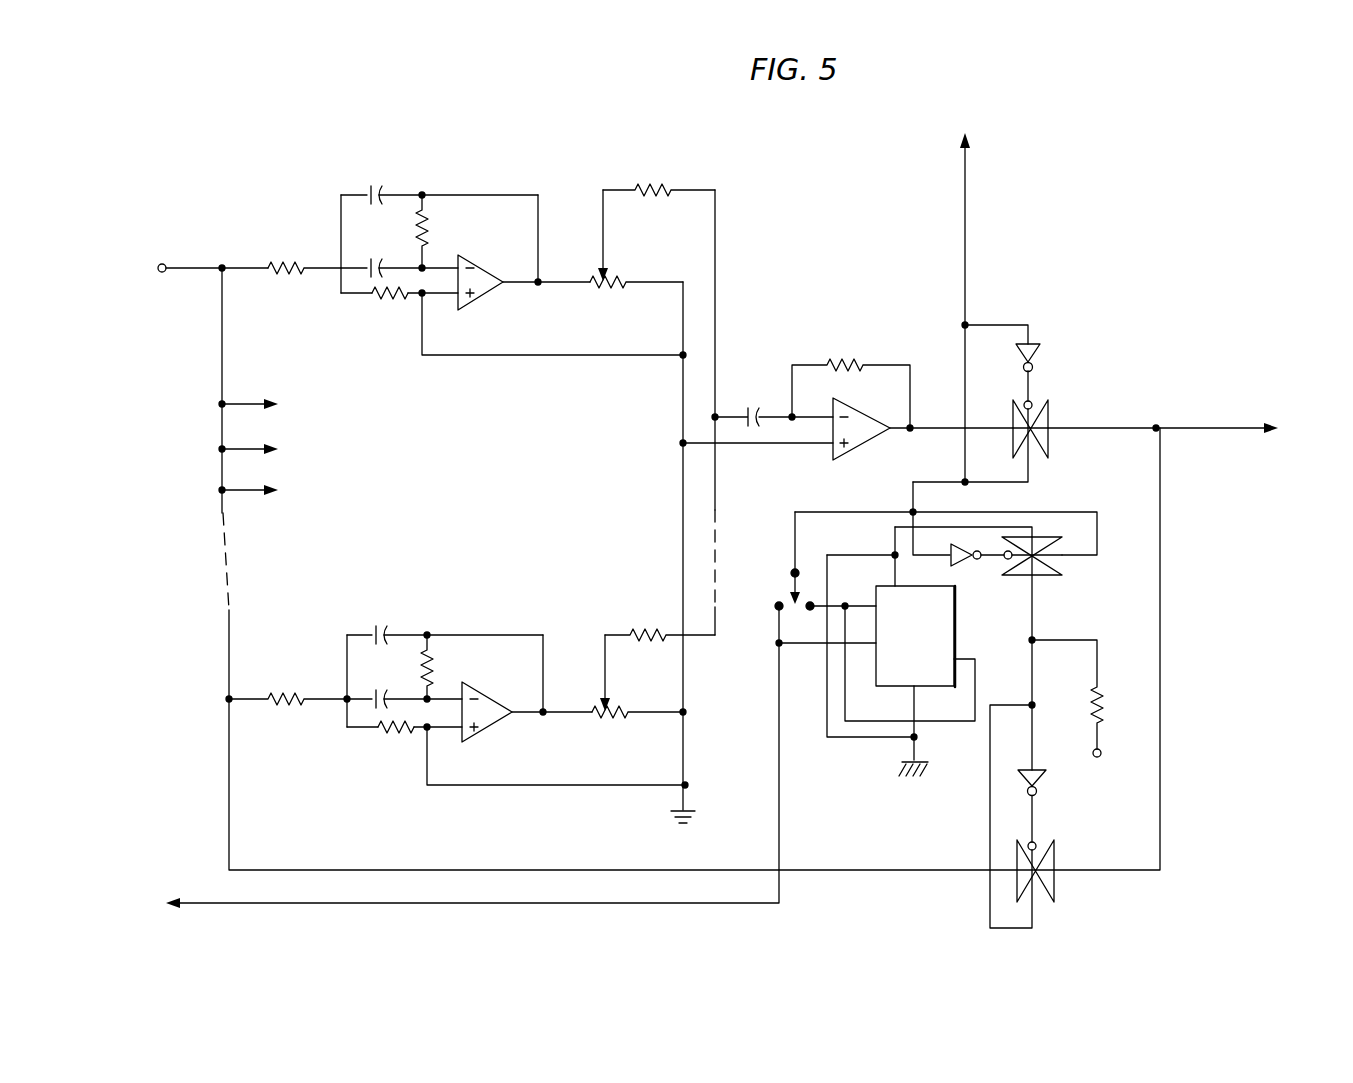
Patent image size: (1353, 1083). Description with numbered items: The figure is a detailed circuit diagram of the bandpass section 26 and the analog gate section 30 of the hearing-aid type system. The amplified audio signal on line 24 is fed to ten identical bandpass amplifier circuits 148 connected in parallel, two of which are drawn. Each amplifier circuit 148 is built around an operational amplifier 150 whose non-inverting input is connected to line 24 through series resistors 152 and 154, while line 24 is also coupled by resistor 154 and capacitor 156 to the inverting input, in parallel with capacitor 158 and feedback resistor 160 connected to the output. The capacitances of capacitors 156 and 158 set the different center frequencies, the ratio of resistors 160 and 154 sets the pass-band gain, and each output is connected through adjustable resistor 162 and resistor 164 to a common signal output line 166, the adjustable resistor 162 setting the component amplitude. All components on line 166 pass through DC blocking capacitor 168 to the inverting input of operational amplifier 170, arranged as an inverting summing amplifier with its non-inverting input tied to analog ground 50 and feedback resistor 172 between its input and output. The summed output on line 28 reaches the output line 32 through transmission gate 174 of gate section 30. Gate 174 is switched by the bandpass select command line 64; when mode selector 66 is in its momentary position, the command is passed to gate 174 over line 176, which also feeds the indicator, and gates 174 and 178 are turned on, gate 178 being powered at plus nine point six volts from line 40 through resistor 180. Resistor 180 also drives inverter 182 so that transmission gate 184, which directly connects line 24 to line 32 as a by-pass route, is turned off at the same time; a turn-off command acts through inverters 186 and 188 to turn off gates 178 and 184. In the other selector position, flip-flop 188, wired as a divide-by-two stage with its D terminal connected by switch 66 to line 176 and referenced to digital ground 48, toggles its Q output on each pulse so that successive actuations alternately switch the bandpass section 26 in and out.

The line 24 is at (183, 265).
The bandpass section 26 is at (687, 459).
The output terminal line 28 is at (941, 425).
The analog gate section 30 is at (1055, 371).
The line 32 is at (1206, 427).
The positive dc voltage line 40 is at (1102, 751).
The digital ground 48 is at (905, 763).
The analog ground 50 is at (676, 814).
The bandpass select command line 64 is at (502, 904).
The mode selector 66 is at (770, 592).
The bandpass amplifier circuit 148 is at (322, 194).
The operational amplifier 150 is at (485, 292).
The resistor 152 is at (389, 304).
The resistor 154 is at (284, 277).
The capacitor 156 is at (371, 261).
The capacitor 158 is at (376, 185).
The feedback resistor 160 is at (428, 224).
The adjustable resistor 162 is at (606, 287).
The resistor 164 is at (656, 188).
The common signal output line 166 is at (717, 293).
The DC blocking capacitor 168 is at (749, 409).
The operational amplifier 170 is at (872, 438).
The feedback resistor 172 is at (843, 362).
The transmission gate 174 is at (1050, 410).
The line 176 is at (967, 238).
The transmission gate 178 is at (1062, 568).
The resistor 180 is at (1103, 692).
The inverter 182 is at (1042, 786).
The transmission gate 184 is at (1058, 880).
The inverter 186 is at (963, 567).
The flip-flop 188 is at (950, 630).